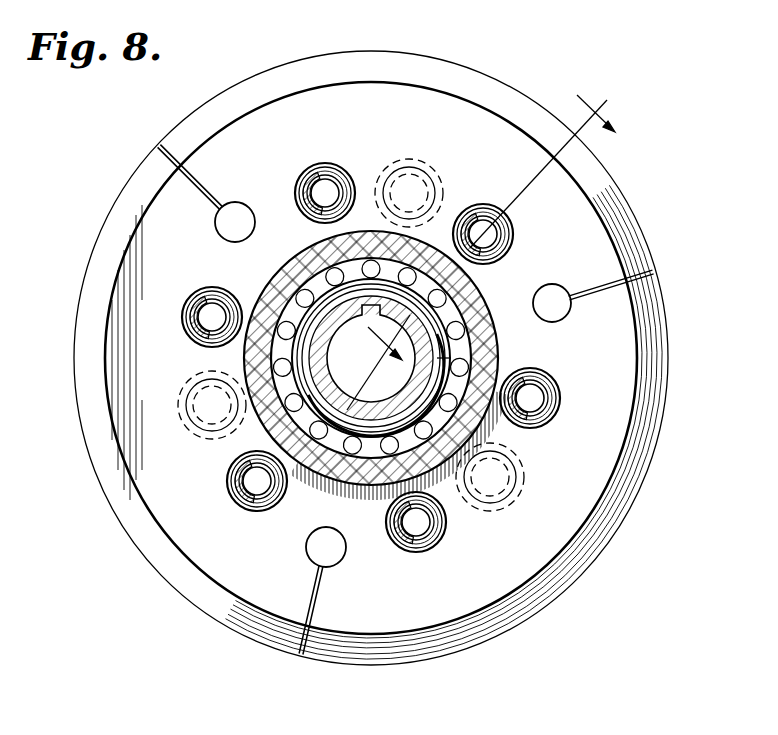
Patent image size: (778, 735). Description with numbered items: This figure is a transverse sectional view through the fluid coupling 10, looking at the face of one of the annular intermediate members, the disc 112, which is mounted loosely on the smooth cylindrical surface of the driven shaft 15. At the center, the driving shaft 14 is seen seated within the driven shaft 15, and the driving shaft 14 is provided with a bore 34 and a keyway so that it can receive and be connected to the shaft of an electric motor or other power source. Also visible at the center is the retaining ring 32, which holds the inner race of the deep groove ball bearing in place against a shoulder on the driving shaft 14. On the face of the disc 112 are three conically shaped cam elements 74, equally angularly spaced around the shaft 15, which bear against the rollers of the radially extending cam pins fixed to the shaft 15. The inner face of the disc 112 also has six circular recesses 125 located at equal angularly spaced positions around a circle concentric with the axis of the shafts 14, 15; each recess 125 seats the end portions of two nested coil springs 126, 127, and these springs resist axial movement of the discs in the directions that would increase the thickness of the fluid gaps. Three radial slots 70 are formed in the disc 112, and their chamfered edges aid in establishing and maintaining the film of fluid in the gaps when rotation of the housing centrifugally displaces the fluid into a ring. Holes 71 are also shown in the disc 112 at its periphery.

The drive assembly 10 is at (481, 244).
The intermediate disc 112 is at (345, 62).
The radial slot 70 is at (168, 146).
The pin hole 71 is at (236, 202).
The conical cam element 74 is at (412, 180).
The circular recess 125 is at (335, 165).
The coil spring 126 is at (315, 165).
The coil spring 127 is at (305, 210).
The driven shaft 15 is at (483, 300).
The retaining ring 32 is at (423, 373).
The bore 34 is at (323, 375).
The driving shaft 14 is at (368, 410).